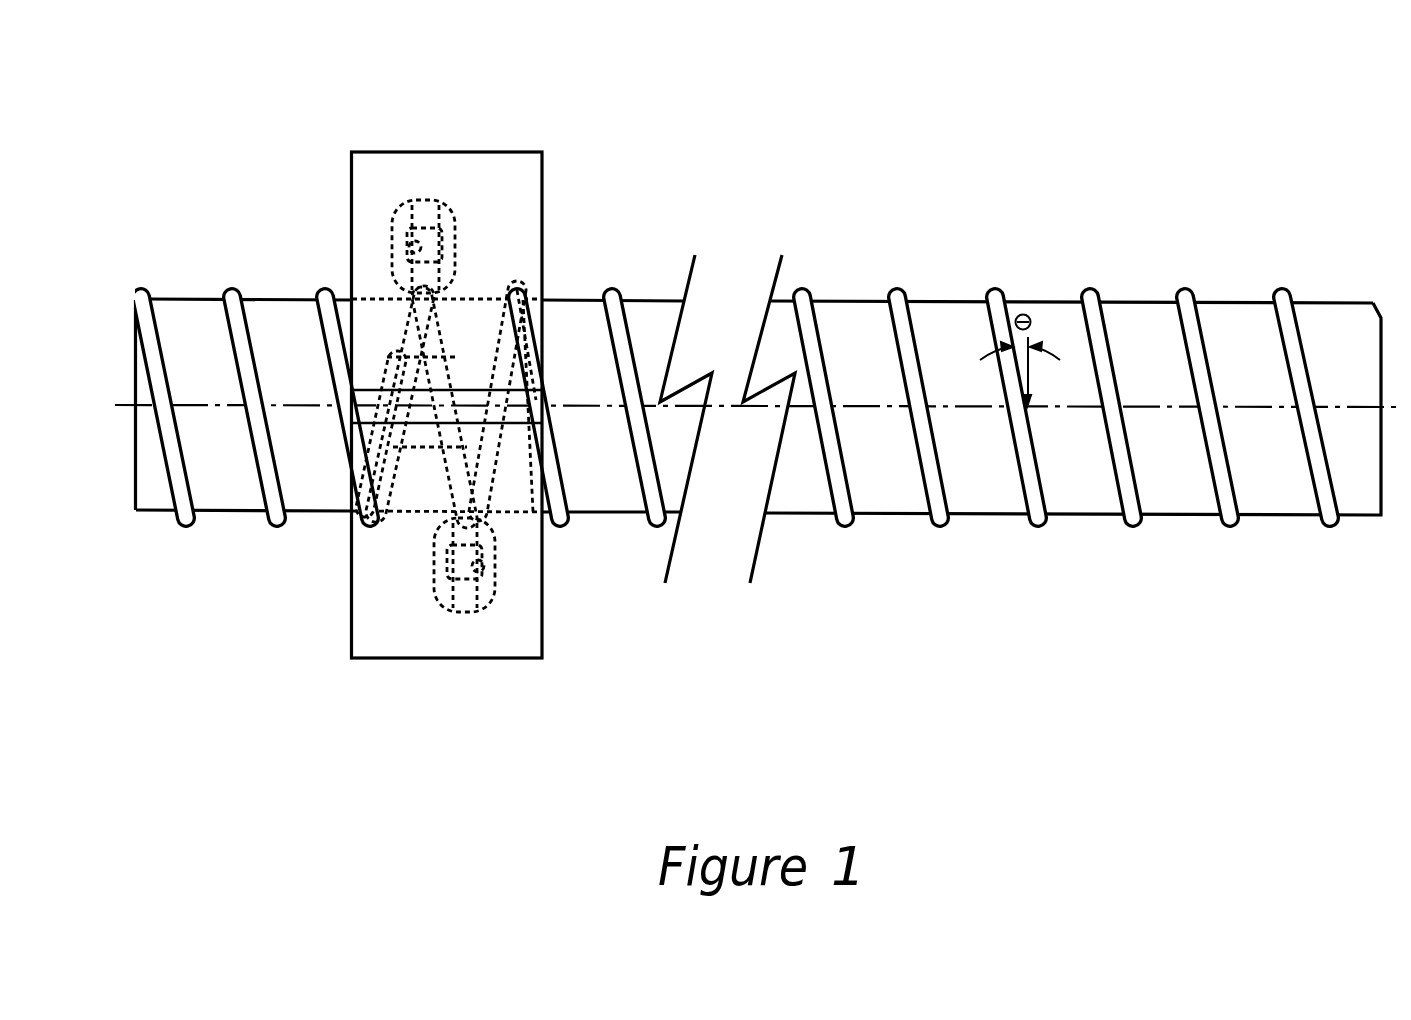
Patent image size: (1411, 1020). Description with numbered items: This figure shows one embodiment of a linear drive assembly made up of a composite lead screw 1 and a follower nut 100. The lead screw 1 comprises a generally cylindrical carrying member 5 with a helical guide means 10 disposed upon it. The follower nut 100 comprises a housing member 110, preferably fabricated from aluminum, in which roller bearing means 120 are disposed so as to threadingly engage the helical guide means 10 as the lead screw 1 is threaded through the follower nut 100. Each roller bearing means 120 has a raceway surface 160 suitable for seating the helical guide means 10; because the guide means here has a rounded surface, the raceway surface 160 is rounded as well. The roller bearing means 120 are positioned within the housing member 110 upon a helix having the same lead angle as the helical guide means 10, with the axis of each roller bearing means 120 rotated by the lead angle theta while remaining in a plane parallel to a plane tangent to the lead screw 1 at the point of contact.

The composite lead screw 1 is at (757, 361).
The carrying member 5 is at (1340, 303).
The helical guide means 10 is at (1092, 290).
The follower nut 100 is at (468, 377).
The housing member 110 is at (522, 185).
The roller bearing means 120 is at (453, 220).
The raceway surface 160 is at (424, 200).